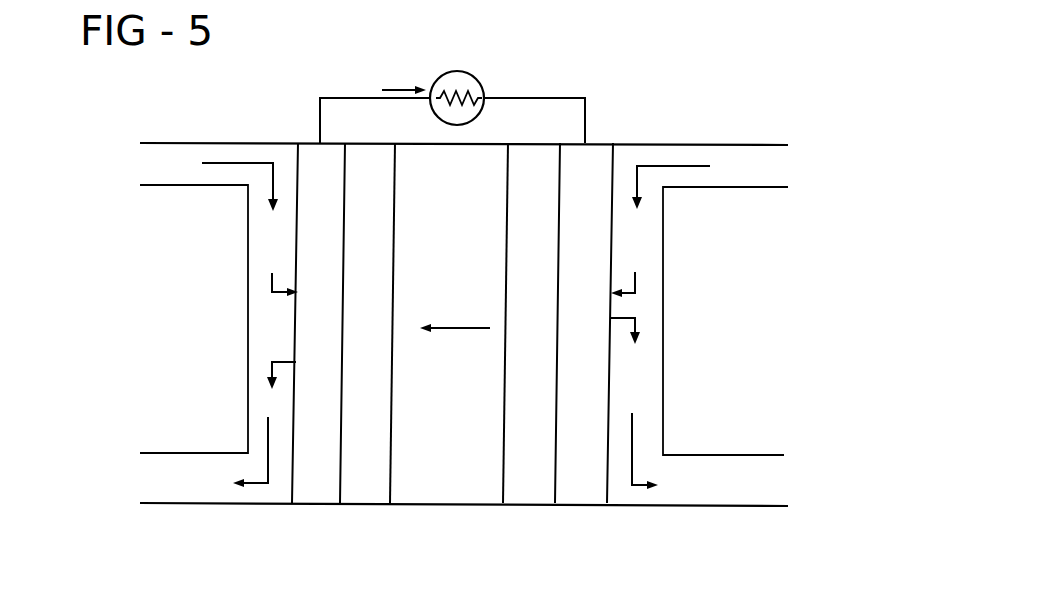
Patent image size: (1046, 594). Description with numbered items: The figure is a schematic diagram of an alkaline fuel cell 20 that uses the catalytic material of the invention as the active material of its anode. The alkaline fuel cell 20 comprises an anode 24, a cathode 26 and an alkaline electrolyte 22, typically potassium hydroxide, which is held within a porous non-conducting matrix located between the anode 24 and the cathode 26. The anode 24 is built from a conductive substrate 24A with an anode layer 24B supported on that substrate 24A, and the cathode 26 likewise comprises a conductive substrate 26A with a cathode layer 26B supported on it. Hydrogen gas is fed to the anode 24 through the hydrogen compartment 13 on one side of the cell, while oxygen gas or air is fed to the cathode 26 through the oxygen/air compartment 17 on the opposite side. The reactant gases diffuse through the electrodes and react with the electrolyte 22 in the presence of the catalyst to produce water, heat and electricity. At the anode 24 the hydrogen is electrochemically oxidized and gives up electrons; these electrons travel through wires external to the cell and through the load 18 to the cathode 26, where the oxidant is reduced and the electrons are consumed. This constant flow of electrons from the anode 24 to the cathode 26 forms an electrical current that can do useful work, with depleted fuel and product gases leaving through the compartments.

The hydrogen compartment 13 is at (228, 333).
The oxygen/air compartment 17 is at (684, 287).
The load 18 is at (455, 52).
The alkaline fuel cell 20 is at (790, 103).
The alkaline electrolyte 22 is at (445, 517).
The anode 24 is at (343, 345).
The conductive substrate 24A is at (318, 323).
The anode layer 24B is at (372, 323).
The cathode 26 is at (558, 345).
The conductive substrate 26A is at (584, 323).
The cathode layer 26B is at (526, 323).